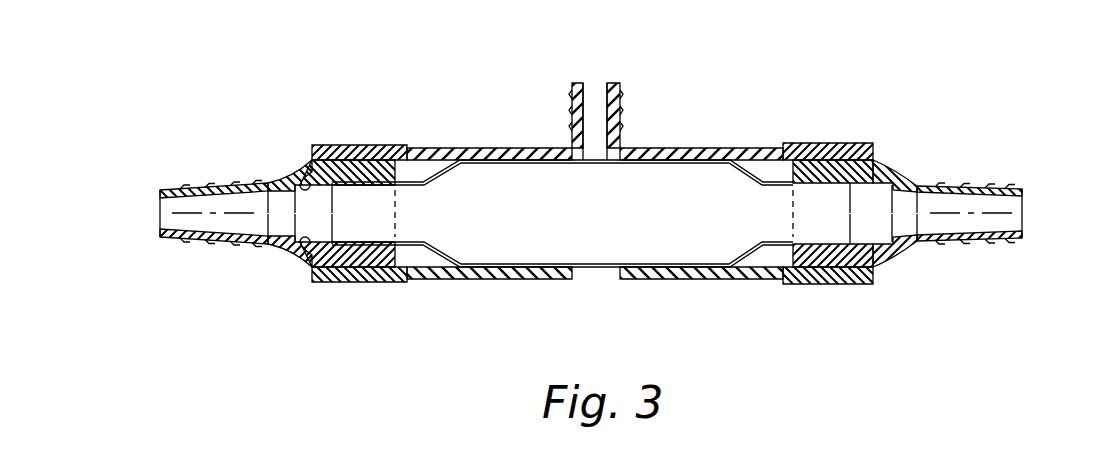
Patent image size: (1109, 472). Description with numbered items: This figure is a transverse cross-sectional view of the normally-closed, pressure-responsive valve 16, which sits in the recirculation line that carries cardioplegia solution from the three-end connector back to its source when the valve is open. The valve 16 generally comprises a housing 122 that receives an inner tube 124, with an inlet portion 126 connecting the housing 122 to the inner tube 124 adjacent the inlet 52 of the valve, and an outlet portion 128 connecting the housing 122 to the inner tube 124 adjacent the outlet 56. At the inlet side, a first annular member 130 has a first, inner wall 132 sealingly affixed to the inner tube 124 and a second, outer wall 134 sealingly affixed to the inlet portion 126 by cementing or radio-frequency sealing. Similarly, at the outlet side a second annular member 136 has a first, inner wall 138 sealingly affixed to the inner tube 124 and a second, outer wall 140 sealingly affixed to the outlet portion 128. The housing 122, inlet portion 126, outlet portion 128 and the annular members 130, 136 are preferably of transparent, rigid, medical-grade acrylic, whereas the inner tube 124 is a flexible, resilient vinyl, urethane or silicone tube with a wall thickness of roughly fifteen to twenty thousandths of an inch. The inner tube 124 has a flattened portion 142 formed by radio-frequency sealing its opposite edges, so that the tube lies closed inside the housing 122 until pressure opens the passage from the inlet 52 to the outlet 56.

The normally-closed, pressure-responsive valve 16 is at (663, 278).
The housing 122 is at (517, 148).
The inner tube 124 is at (415, 180).
The flattened portion 142 is at (637, 172).
The second annular member 136 is at (358, 160).
The second outer wall 140 is at (322, 160).
The first inner wall 138 is at (290, 160).
The outlet portion 128 is at (260, 247).
The outlet 56 is at (160, 203).
The second outer wall 134 is at (865, 160).
The first annular member 130 is at (817, 160).
The first inner wall 132 is at (897, 170).
The inlet portion 126 is at (930, 246).
The inlet 52 is at (1025, 213).